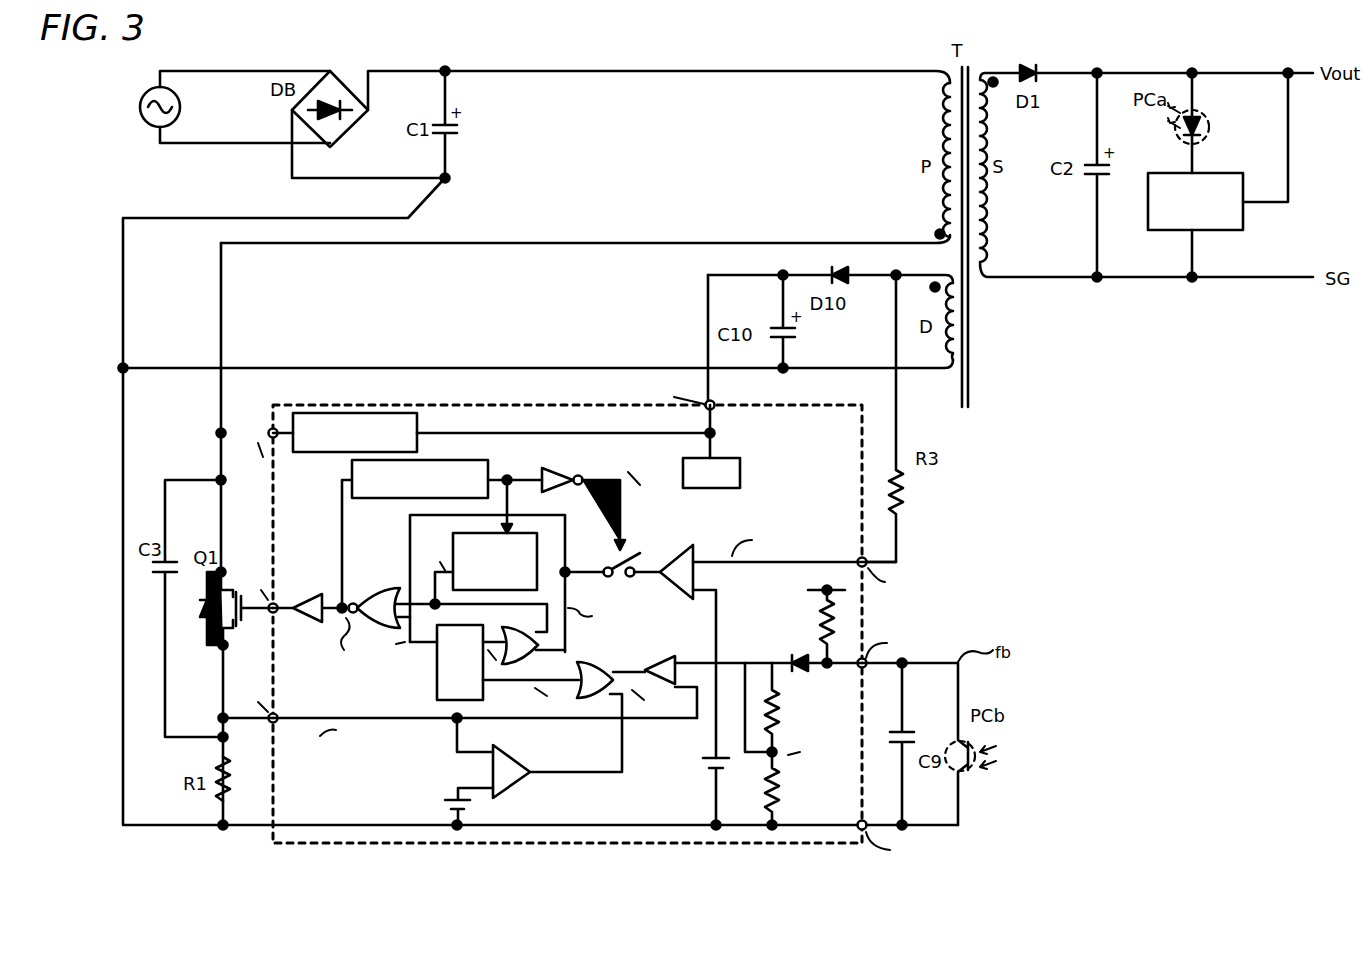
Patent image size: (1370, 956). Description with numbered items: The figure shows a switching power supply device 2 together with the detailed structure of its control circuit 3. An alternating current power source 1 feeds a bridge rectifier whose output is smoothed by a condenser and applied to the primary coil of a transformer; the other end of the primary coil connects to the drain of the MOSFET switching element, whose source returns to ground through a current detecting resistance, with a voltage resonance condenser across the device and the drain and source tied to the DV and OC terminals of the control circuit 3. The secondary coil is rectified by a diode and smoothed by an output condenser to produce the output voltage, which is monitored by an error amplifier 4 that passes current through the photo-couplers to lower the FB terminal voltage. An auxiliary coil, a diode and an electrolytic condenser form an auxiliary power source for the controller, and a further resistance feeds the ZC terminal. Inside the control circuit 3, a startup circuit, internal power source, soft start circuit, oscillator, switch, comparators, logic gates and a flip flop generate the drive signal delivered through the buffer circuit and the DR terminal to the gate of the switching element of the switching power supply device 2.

The alternating current power source 1 is at (138, 104).
The switching power supply device 2 is at (632, 58).
The control circuit 3 is at (863, 624).
The error amplifier 4 is at (1148, 202).